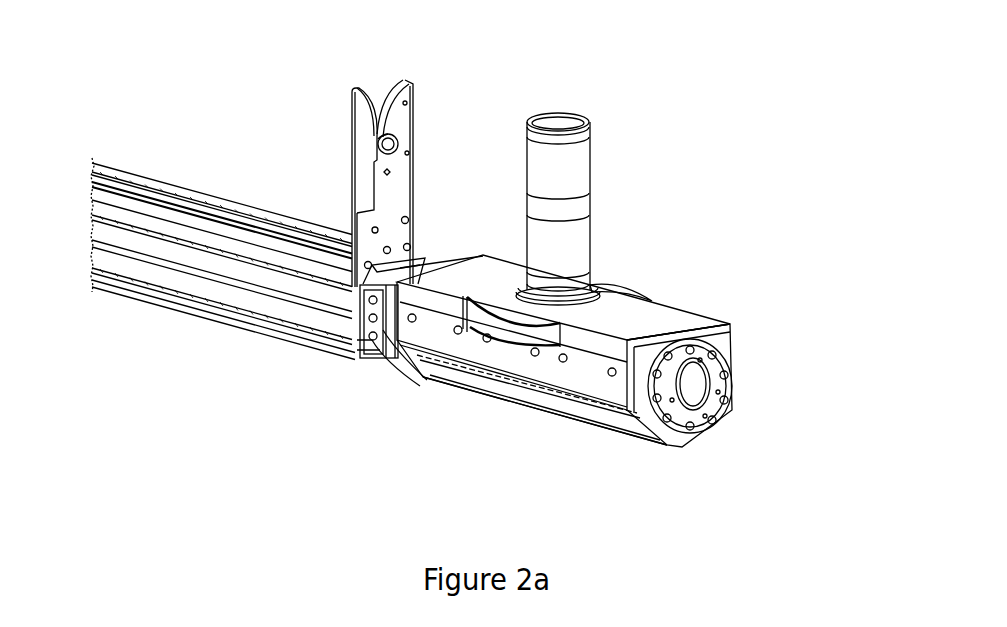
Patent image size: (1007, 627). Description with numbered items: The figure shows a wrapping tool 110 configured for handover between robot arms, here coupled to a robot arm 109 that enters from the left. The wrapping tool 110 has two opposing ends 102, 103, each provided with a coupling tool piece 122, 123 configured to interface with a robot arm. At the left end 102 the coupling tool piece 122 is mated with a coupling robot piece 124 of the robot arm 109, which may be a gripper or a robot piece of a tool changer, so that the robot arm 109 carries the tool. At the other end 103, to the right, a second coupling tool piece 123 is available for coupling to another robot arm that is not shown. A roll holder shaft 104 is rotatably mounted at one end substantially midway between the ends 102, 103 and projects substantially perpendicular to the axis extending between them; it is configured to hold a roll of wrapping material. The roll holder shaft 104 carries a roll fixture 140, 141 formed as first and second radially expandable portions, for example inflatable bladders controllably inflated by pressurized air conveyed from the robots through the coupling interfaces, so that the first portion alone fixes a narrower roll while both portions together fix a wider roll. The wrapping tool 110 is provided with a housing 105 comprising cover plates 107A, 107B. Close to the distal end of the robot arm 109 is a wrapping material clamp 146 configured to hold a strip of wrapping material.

The end 102 is at (460, 250).
The end 103 is at (736, 329).
The roll holder shaft 104 is at (557, 117).
The housing 105 is at (526, 410).
The cover plate 107A is at (678, 320).
The cover plate 107B is at (595, 382).
The robot arm 109 is at (162, 180).
The wrapping tool 110 is at (473, 412).
The coupling tool piece 122 is at (365, 325).
The coupling tool piece 123 is at (732, 383).
The coupling robot piece 124 is at (353, 290).
The roll fixture 140 is at (582, 152).
The roll fixture 141 is at (582, 230).
The wrapping material clamp 146 is at (387, 190).